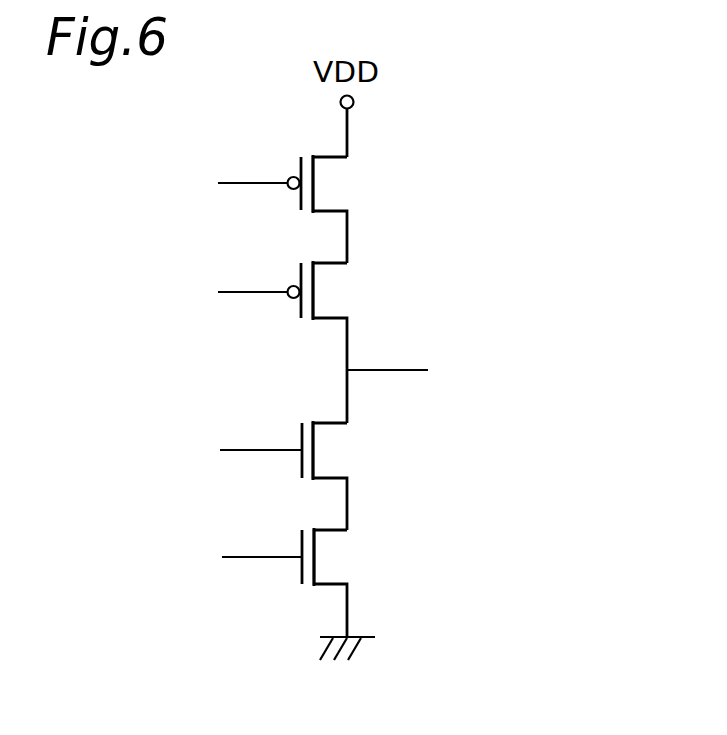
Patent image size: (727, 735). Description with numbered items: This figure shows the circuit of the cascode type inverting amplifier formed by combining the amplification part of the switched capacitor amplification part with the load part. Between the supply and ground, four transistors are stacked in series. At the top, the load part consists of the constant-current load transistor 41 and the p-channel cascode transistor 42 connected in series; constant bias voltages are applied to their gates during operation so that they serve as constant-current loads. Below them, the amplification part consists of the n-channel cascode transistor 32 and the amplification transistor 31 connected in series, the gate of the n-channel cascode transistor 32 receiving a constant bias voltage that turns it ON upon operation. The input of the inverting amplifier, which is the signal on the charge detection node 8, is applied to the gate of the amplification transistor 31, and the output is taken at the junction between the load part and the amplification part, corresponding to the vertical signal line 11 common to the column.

The constant-current load transistor 41 is at (318, 185).
The p-channel cascode transistor 42 is at (320, 294).
The vertical signal line 11 is at (347, 370).
The n-channel cascode transistor 32 is at (320, 452).
The amplification transistor 31 is at (320, 559).
The charge detection node 8 is at (238, 557).